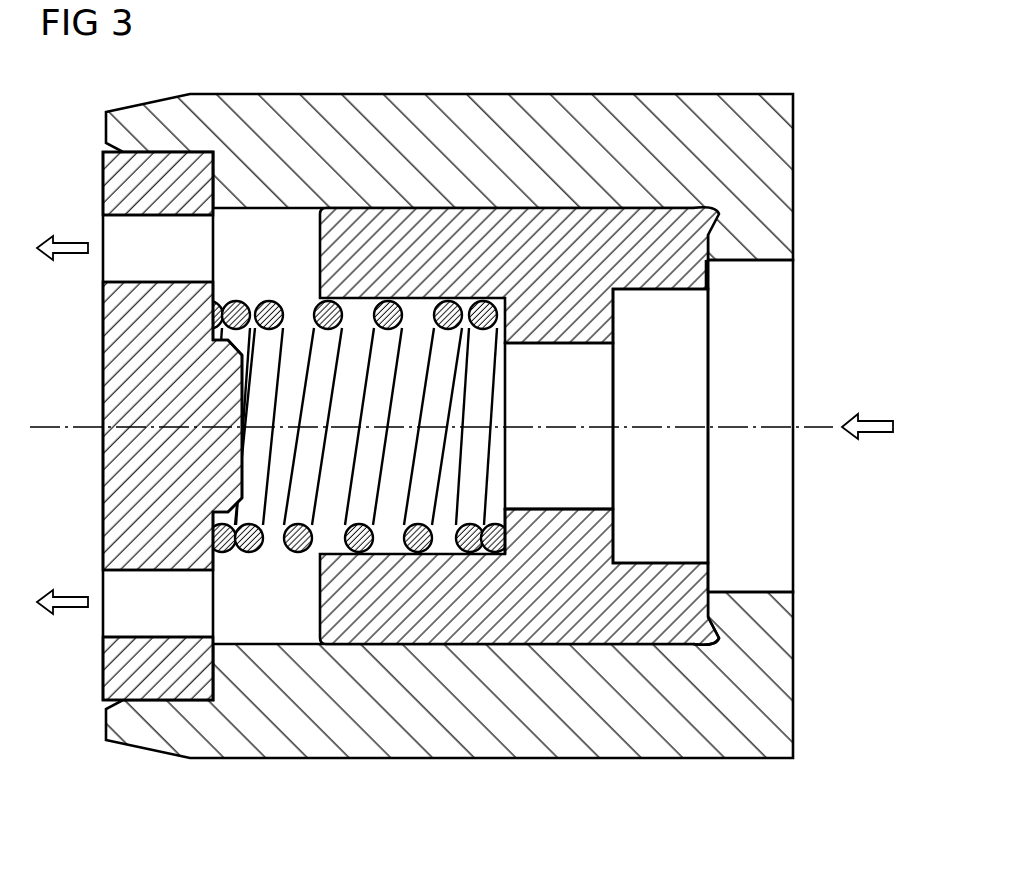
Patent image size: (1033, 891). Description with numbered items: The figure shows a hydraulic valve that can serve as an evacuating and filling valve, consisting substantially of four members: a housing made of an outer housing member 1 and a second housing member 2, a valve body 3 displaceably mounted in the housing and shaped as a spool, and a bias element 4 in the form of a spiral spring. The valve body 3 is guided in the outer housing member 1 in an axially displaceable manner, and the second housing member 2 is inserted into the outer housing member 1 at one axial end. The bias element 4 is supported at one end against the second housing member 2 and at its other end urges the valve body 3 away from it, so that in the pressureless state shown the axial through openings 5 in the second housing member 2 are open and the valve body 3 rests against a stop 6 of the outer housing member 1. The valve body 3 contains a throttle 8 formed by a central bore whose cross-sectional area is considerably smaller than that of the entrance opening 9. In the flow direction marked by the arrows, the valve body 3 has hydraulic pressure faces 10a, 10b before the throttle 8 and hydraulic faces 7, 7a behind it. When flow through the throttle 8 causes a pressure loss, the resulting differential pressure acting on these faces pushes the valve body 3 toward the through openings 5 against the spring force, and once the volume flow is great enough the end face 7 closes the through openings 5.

The outer housing member 1 is at (484, 104).
The second housing member 2 is at (112, 180).
The valve body 3 is at (577, 635).
The bias element 4 is at (247, 541).
The axial through openings 5 is at (112, 272).
The stop 6 is at (712, 603).
The end face 7 is at (317, 602).
The hydraulic face 7a is at (498, 508).
The throttle 8 is at (600, 396).
The entrance opening 9 is at (797, 392).
The hydraulic pressure face 10a is at (615, 322).
The hydraulic pressure face 10b is at (710, 282).